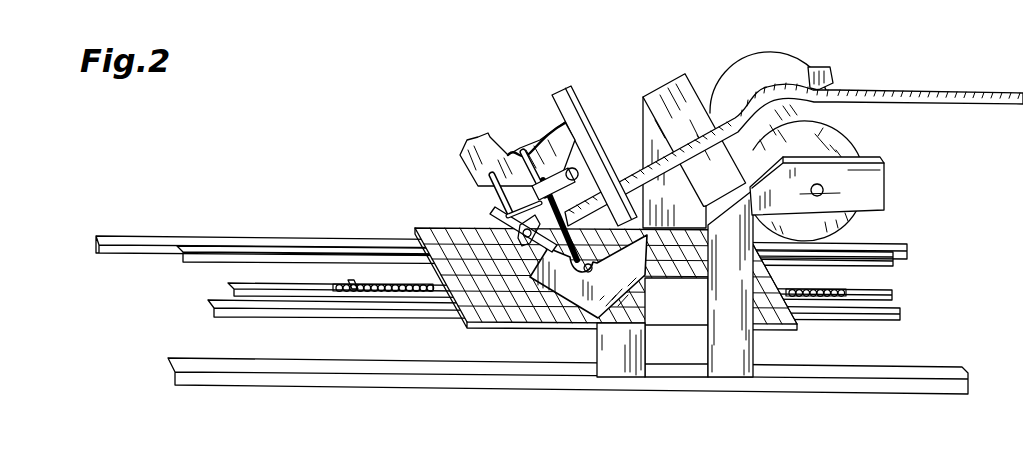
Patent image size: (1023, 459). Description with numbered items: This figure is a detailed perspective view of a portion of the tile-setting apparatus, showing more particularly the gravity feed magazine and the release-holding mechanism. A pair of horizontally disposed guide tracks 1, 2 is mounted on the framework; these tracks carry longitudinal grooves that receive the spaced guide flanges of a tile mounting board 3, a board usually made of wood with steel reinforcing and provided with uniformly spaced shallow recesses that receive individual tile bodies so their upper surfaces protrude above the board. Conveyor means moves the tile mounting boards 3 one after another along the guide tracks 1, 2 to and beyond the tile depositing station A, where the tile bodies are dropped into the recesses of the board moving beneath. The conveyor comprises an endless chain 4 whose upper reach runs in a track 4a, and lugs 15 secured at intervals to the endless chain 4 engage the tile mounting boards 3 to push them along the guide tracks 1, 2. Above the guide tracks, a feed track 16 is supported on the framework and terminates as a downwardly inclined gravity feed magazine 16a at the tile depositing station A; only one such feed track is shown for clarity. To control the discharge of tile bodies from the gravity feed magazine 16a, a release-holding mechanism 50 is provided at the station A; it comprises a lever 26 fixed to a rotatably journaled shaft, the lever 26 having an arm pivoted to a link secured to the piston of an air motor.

The guide track 1 is at (222, 314).
The guide track 2 is at (183, 261).
The tile mounting board 3 is at (508, 327).
The endless chain 4 is at (410, 293).
The track 4a is at (289, 287).
The lugs 15 is at (358, 282).
The feed track 16 is at (935, 105).
The gravity feed magazine 16a is at (641, 164).
The lever 26 is at (496, 256).
The release-holding mechanism 50 is at (497, 220).
The tile depositing station A is at (521, 126).